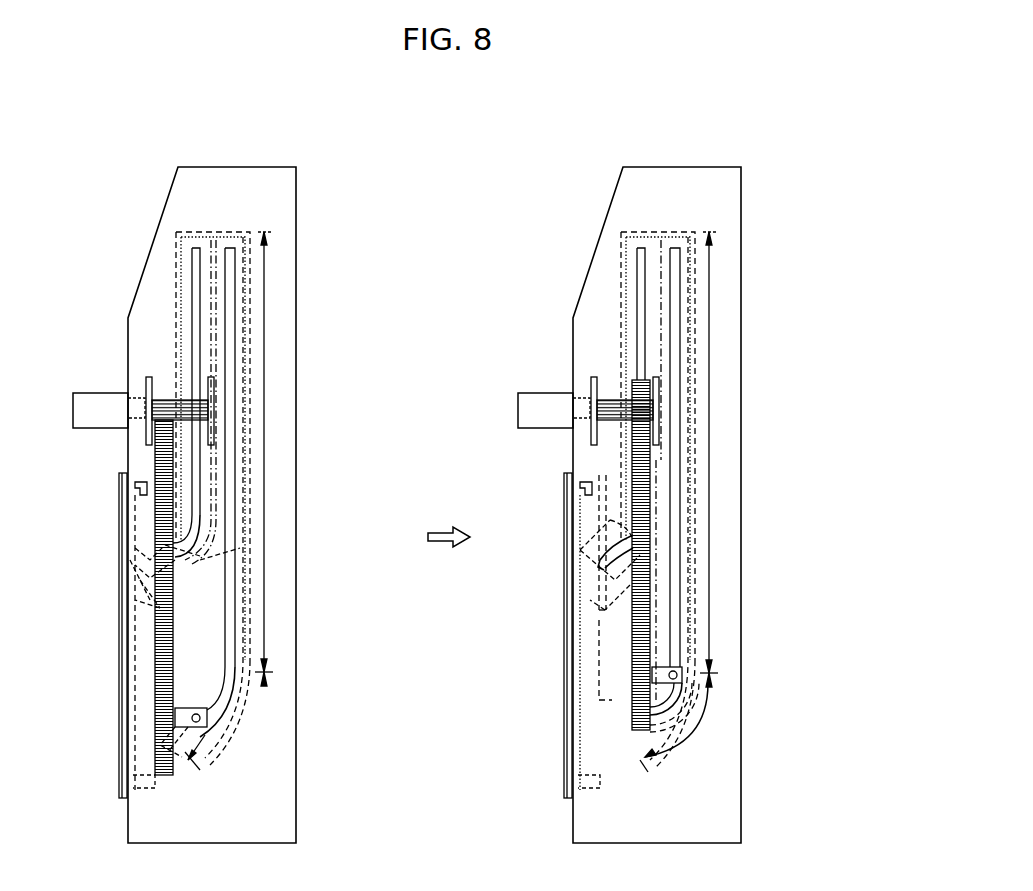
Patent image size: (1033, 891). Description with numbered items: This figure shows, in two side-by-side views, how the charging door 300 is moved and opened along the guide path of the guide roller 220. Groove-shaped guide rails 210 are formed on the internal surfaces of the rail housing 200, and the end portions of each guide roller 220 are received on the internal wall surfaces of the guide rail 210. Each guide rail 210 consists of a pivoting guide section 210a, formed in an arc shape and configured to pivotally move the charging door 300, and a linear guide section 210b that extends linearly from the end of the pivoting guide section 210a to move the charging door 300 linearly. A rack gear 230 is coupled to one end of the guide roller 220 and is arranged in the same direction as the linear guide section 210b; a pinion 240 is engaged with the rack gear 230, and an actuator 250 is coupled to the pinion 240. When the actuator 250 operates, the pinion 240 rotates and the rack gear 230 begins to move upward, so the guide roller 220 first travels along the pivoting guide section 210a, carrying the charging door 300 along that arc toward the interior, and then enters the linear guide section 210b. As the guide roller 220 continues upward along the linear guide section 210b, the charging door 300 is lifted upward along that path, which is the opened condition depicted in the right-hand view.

The rail housing 200 is at (225, 185).
The guide rail 210 is at (210, 262).
The pivoting guide section 210a is at (250, 720).
The linear guide section 210b is at (265, 452).
The guide roller 220 is at (175, 562).
The rack gear 230 is at (158, 660).
The pinion 240 is at (185, 395).
The actuator 250 is at (92, 400).
The charging door 300 is at (660, 607).